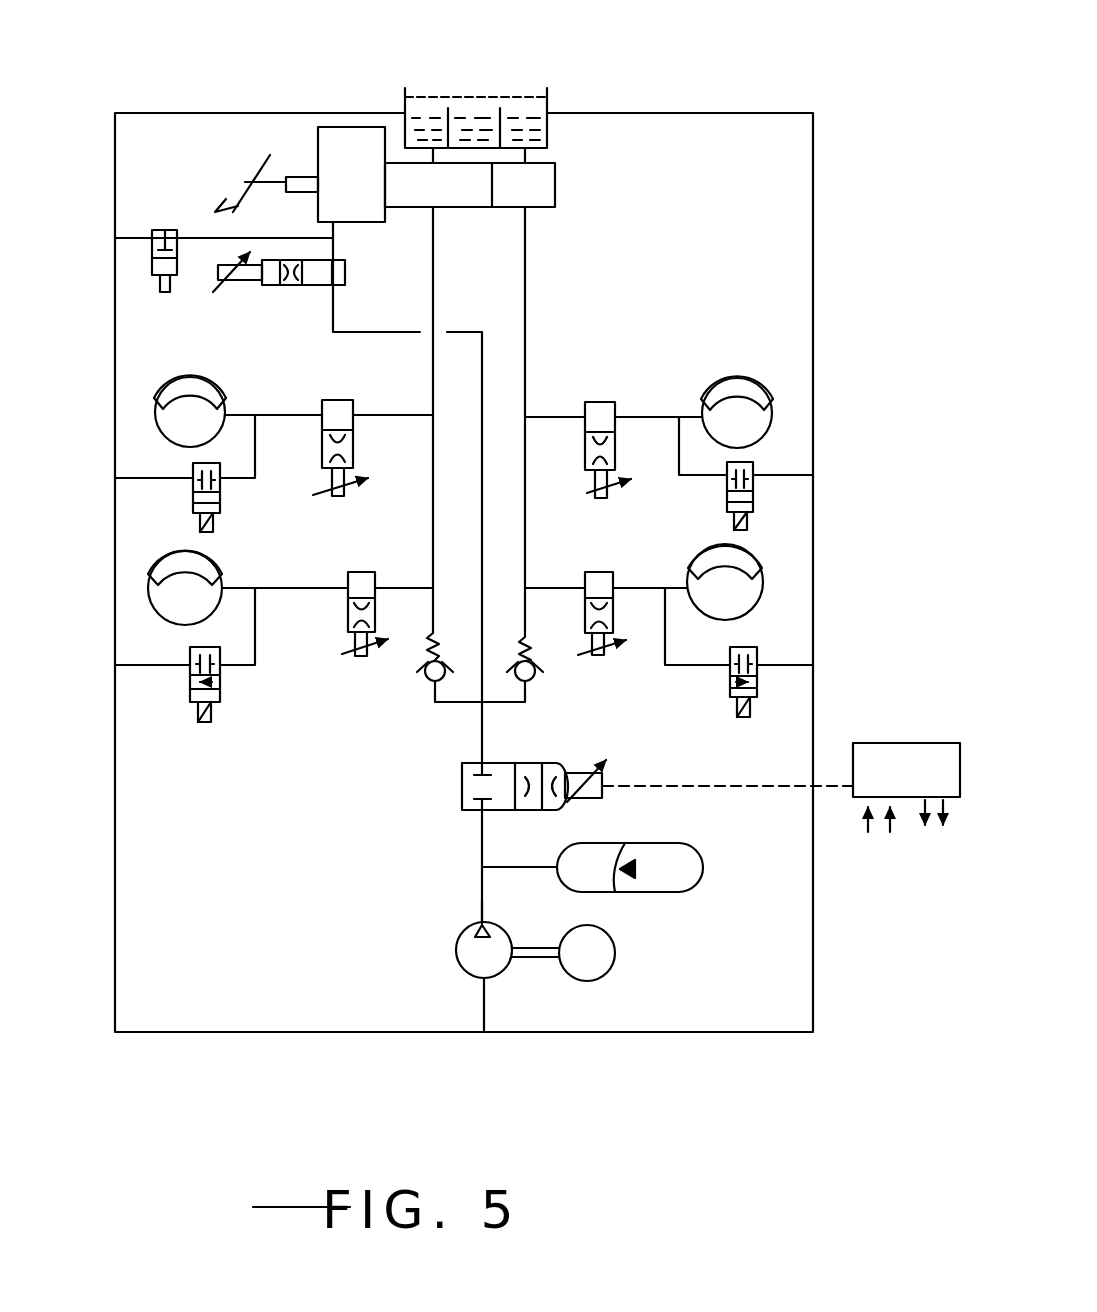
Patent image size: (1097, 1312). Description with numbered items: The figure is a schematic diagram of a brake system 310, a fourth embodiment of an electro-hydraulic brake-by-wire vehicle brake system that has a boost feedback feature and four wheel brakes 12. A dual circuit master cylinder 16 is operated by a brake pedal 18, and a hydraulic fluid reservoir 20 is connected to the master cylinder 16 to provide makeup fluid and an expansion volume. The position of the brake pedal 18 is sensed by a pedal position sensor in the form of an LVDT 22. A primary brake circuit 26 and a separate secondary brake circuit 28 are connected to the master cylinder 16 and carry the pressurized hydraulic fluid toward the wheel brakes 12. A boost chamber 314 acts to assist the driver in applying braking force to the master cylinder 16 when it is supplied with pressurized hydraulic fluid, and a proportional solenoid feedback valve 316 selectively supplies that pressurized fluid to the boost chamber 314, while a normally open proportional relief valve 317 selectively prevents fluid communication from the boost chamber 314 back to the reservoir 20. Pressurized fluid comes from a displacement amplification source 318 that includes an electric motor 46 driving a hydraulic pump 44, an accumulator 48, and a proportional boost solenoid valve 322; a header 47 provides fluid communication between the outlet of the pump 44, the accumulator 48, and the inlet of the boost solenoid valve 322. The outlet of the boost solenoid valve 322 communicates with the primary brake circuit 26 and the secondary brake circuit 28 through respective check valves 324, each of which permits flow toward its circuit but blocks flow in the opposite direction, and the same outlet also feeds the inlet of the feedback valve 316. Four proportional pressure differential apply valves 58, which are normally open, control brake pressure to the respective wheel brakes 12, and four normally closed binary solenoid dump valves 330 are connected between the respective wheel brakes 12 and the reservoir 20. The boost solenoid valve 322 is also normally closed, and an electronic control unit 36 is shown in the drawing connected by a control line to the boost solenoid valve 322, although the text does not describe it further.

The brake system 310 is at (786, 88).
The wheel brake 12 is at (175, 377).
The master cylinder 16 is at (555, 183).
The brake pedal 18 is at (244, 190).
The hydraulic fluid reservoir 20 is at (518, 108).
The LVDT 22 is at (298, 176).
The primary brake circuit 26 is at (437, 283).
The secondary brake circuit 28 is at (525, 250).
The electronic control unit (ECU) 36 is at (918, 742).
The hydraulic pump 44 is at (457, 953).
The electric motor 46 is at (615, 957).
The header 47 is at (482, 900).
The accumulator 48 is at (692, 843).
The apply valve 58 is at (353, 405).
The boost chamber 314 is at (345, 150).
The proportional solenoid feedback valve 316 is at (315, 287).
The proportional relief valve 317 is at (172, 283).
The displacement amplification source 318 is at (412, 876).
The proportional boost solenoid valve 322 is at (462, 787).
The check valve 324 is at (425, 673).
The dump valve 330 is at (223, 490).